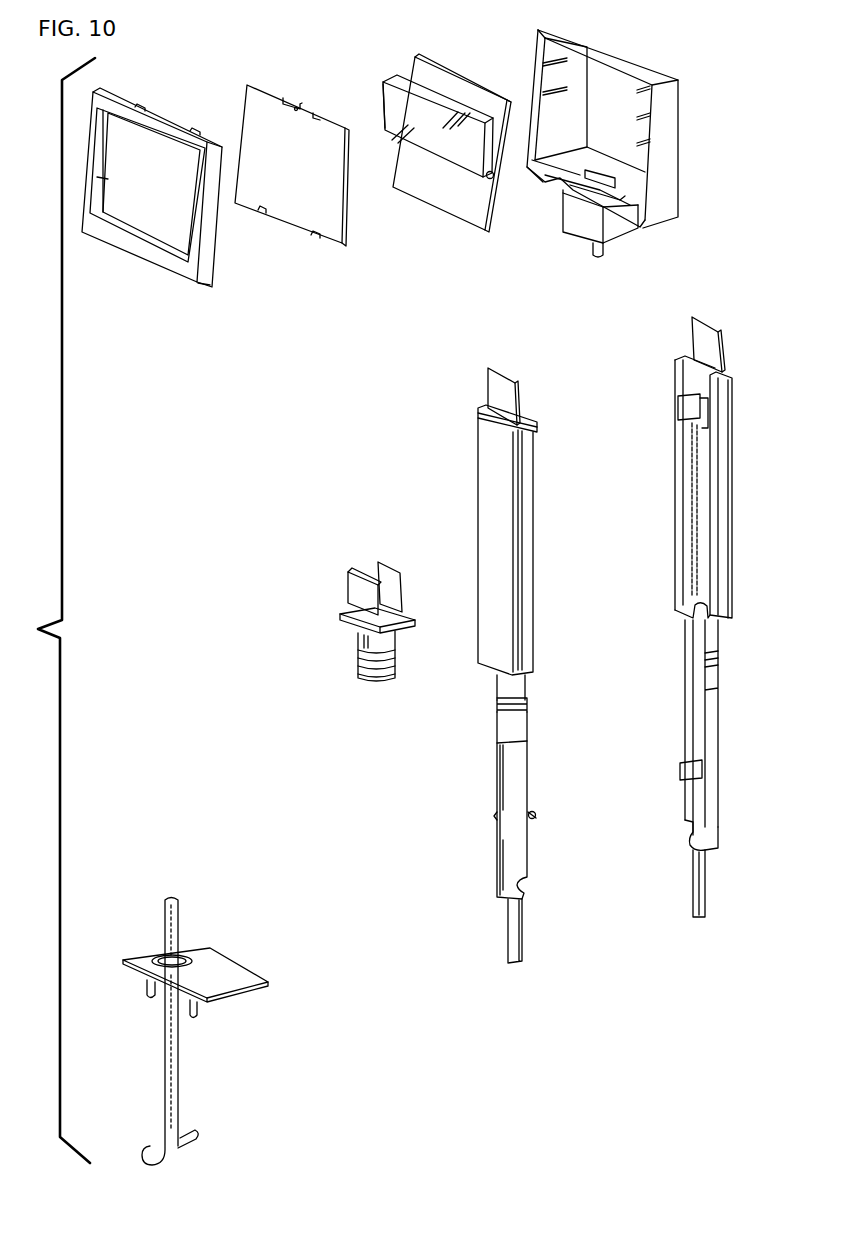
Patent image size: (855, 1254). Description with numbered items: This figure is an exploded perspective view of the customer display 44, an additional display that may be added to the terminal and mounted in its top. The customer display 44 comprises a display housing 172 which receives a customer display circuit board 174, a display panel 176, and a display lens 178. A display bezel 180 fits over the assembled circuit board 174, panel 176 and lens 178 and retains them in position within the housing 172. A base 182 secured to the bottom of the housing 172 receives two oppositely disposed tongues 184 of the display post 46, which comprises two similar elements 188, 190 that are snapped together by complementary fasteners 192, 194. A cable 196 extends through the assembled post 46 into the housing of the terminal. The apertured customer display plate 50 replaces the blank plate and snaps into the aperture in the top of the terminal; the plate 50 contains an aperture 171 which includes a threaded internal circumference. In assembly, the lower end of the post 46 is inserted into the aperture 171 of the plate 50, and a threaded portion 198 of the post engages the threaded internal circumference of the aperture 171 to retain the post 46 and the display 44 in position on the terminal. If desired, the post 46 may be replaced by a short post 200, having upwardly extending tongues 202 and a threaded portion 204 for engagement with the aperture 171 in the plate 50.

The customer display 44 is at (442, 585).
The display post 46 is at (666, 636).
The apertured customer display plate 50 is at (205, 977).
The aperture 171 is at (185, 957).
The display housing 172 is at (675, 135).
The customer display circuit board 174 is at (468, 217).
The display panel 176 is at (388, 88).
The display lens 178 is at (335, 238).
The display bezel 180 is at (160, 262).
The base 182 is at (622, 238).
The tongues 184 is at (490, 390).
The post element 188 is at (478, 480).
The post element 190 is at (725, 517).
The complementary fastener 192 is at (678, 405).
The complementary fastener 194 is at (540, 818).
The cable 196 is at (595, 246).
The threaded portion 198 is at (522, 712).
The short post 200 is at (369, 617).
The tongues 202 is at (395, 575).
The threaded portion 204 is at (395, 662).